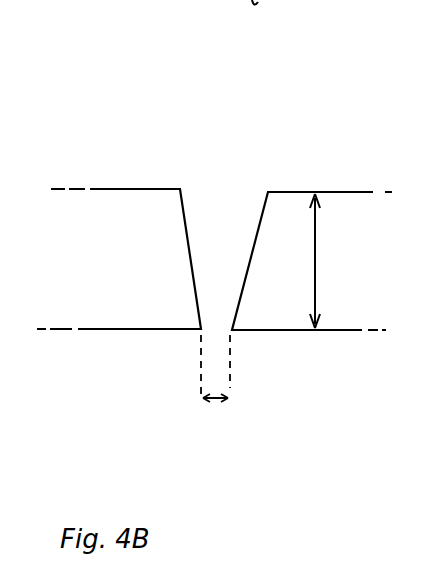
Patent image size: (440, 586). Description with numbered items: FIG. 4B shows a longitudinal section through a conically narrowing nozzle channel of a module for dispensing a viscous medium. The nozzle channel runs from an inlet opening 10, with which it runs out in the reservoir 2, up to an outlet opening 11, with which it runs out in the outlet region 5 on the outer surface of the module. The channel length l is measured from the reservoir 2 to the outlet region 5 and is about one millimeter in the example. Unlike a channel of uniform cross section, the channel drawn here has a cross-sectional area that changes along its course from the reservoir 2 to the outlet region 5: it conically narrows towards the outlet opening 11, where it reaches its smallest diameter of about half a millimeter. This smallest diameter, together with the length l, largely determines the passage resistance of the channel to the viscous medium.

The reservoir 2 is at (160, 173).
The inlet opening 10 is at (245, 185).
The outlet region 5 is at (150, 329).
The outlet opening 11 is at (215, 335).